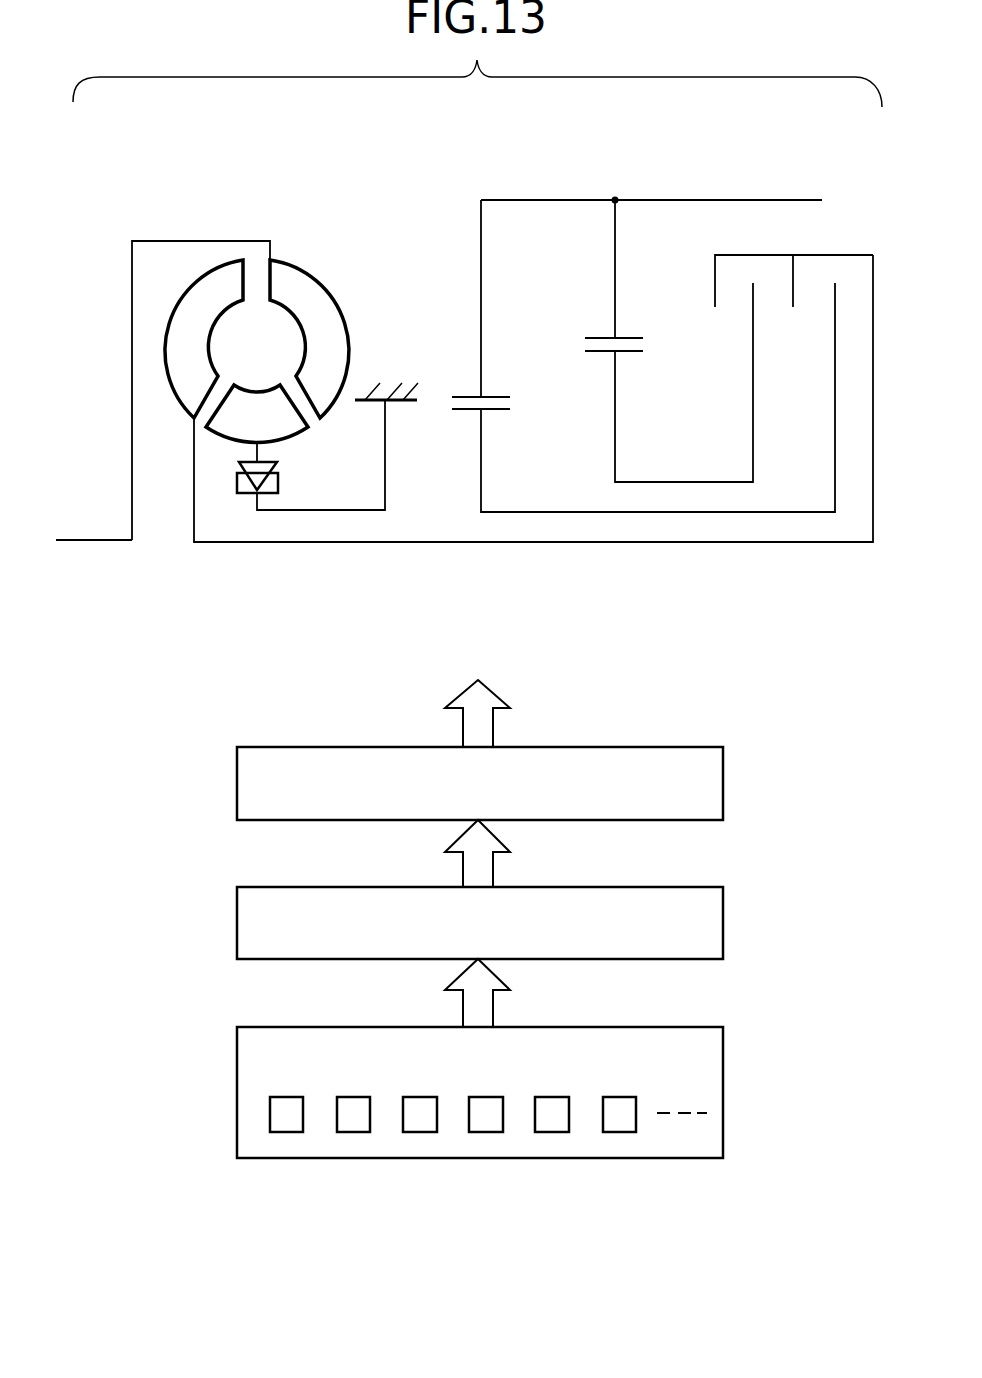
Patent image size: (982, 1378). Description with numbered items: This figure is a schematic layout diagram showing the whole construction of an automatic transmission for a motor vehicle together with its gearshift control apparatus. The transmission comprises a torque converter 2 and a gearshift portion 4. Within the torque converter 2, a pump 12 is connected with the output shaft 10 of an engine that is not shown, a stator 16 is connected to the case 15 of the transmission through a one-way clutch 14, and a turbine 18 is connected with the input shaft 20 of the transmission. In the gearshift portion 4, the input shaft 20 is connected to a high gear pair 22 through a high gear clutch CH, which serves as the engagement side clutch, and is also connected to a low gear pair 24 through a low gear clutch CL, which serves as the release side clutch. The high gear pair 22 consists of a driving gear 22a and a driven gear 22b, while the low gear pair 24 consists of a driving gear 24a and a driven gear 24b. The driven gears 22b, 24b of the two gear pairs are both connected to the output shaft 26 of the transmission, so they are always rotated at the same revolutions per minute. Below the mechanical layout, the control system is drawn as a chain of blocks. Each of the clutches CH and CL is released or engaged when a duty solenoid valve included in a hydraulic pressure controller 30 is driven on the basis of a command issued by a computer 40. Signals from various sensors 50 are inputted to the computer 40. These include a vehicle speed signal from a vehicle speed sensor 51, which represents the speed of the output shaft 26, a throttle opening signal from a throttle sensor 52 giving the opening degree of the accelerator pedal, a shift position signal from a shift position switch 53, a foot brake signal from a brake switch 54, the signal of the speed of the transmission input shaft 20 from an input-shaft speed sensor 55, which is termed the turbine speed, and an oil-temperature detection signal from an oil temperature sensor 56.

The torque converter 2 is at (292, 234).
The gearshift portion 4 is at (597, 174).
The output shaft 10 is at (87, 540).
The pump 12 is at (320, 302).
The one-way clutch 14 is at (278, 483).
The case 15 is at (388, 392).
The stator 16 is at (255, 398).
The turbine 18 is at (183, 320).
The input shaft 20 is at (592, 543).
The high gear pair 22 is at (636, 298).
The driving gear 22a is at (632, 353).
The driven gear 22b is at (644, 338).
The low gear pair 24 is at (502, 338).
The driving gear 24a is at (493, 412).
The driven gear 24b is at (507, 395).
The output shaft 26 is at (688, 200).
The high gear clutch CH is at (758, 312).
The low gear clutch CL is at (840, 312).
The hydraulic pressure controller 30 is at (727, 783).
The computer 40 is at (727, 928).
The various sensors 50 is at (727, 1097).
The vehicle speed sensor 51 is at (285, 1120).
The throttle sensor 52 is at (352, 1120).
The shift position switch 53 is at (419, 1120).
The brake switch 54 is at (485, 1120).
The input-shaft speed sensor 55 is at (552, 1120).
The oil temperature sensor 56 is at (619, 1120).